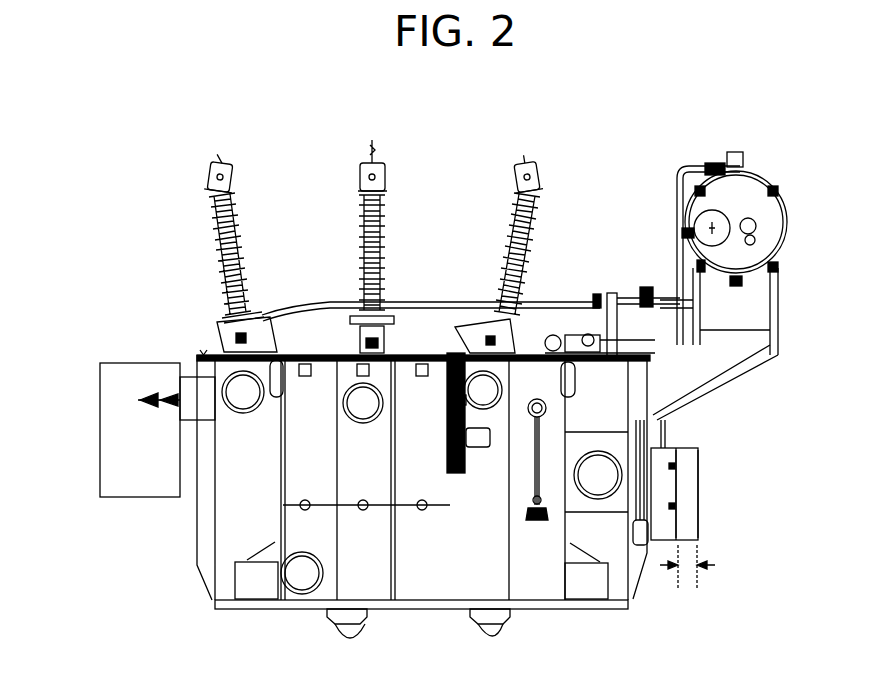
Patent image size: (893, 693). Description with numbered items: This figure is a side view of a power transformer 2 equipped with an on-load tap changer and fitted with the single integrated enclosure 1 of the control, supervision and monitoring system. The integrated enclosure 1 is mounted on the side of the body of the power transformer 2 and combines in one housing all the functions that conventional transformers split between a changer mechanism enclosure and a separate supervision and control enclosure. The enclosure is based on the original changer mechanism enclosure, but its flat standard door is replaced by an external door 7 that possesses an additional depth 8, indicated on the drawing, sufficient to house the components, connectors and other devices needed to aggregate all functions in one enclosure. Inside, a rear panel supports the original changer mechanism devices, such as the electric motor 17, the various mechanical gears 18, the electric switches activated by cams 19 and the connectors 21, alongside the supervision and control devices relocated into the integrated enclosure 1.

The integrated enclosure 1 is at (662, 478).
The power transformer 2 is at (245, 476).
The external door 7 is at (706, 525).
The additional depth 8 is at (715, 593).
The electric motor 17 is at (598, 475).
The mechanical gears 18 is at (480, 462).
The electric switches activated by cams 19 is at (537, 532).
The connectors 21 is at (383, 347).